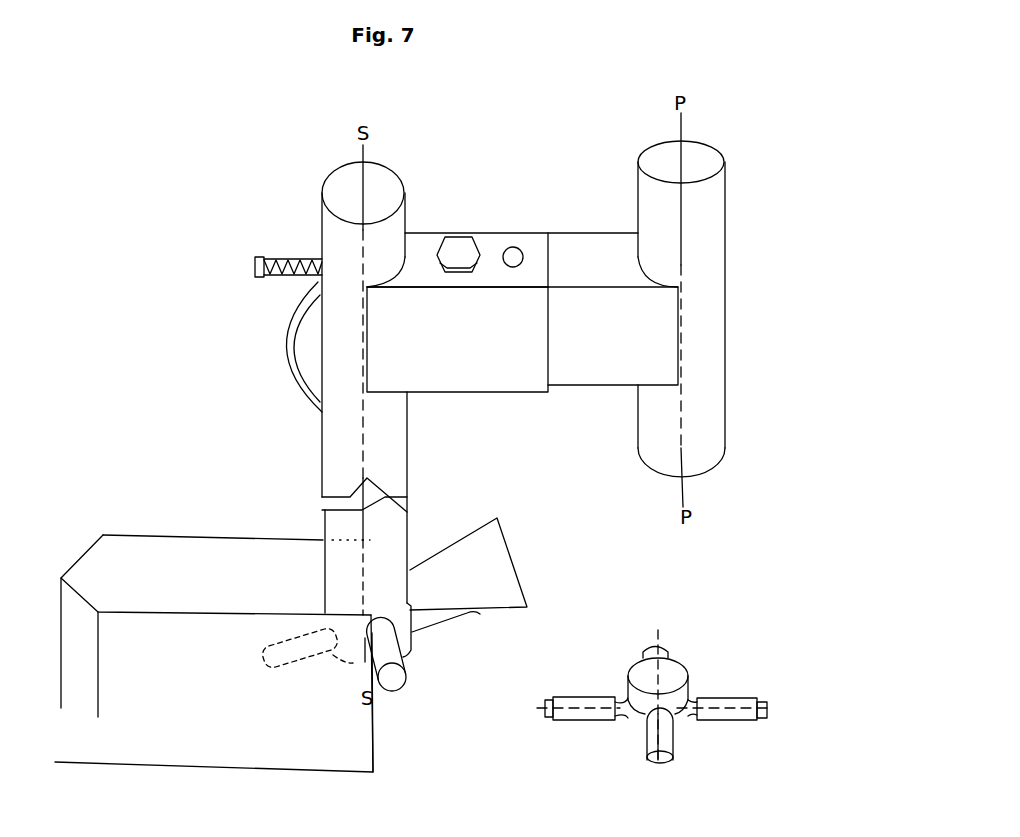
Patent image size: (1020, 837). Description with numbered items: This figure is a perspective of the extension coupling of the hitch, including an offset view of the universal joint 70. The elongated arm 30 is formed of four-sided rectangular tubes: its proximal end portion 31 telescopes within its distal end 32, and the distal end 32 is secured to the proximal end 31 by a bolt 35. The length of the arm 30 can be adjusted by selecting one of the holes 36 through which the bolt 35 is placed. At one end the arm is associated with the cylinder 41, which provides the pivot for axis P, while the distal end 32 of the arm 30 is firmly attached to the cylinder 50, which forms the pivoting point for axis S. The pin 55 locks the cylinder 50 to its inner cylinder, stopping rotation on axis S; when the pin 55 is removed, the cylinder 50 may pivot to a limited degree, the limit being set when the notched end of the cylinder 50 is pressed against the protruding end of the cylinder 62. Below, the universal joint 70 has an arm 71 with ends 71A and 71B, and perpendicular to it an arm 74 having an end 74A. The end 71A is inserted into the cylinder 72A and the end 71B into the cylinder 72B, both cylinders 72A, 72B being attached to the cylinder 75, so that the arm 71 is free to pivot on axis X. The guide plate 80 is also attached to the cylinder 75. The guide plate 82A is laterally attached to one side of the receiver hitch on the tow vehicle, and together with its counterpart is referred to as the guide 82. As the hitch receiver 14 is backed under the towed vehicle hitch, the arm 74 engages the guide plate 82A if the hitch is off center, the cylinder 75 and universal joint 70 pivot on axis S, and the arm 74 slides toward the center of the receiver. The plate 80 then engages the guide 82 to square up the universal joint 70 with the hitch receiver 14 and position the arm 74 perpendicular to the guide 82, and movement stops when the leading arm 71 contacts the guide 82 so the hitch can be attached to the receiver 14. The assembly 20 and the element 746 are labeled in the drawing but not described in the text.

The hitch receiver 14 is at (203, 568).
The tool holder assembly 20 is at (285, 435).
The elongated arm 30 is at (513, 355).
The proximal end portion 31 is at (637, 348).
The distal end 32 is at (397, 365).
The bolt 35 is at (458, 248).
The holes 36 is at (508, 247).
The cylinder 41 is at (683, 433).
The cylinder 50 is at (388, 420).
The pin 55 is at (290, 257).
The cylinder 62 is at (382, 537).
The universal joint 70 is at (687, 695).
The arm 71 is at (765, 697).
The end 71A is at (763, 718).
The end 71B is at (547, 702).
The cylinder 72A is at (715, 703).
The cylinder 72B is at (597, 702).
The arm 74 is at (663, 732).
The end 74A is at (663, 645).
The cylinder 75 is at (640, 670).
The guide plate 80 is at (500, 590).
The guide plate 82 is at (155, 503).
The guide plate 82A is at (352, 748).
The bit 746 is at (396, 685).